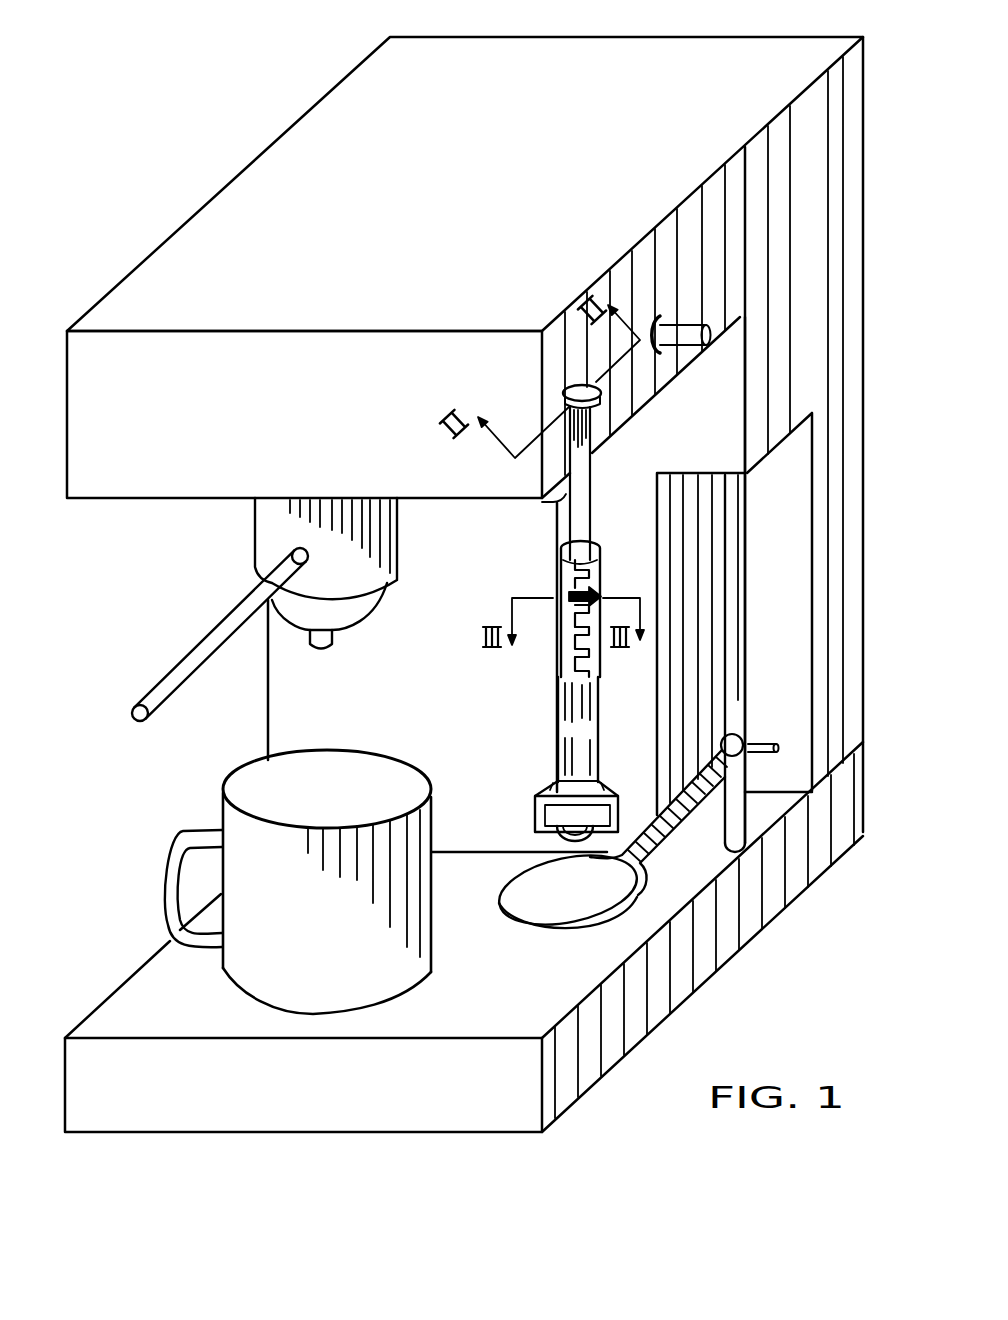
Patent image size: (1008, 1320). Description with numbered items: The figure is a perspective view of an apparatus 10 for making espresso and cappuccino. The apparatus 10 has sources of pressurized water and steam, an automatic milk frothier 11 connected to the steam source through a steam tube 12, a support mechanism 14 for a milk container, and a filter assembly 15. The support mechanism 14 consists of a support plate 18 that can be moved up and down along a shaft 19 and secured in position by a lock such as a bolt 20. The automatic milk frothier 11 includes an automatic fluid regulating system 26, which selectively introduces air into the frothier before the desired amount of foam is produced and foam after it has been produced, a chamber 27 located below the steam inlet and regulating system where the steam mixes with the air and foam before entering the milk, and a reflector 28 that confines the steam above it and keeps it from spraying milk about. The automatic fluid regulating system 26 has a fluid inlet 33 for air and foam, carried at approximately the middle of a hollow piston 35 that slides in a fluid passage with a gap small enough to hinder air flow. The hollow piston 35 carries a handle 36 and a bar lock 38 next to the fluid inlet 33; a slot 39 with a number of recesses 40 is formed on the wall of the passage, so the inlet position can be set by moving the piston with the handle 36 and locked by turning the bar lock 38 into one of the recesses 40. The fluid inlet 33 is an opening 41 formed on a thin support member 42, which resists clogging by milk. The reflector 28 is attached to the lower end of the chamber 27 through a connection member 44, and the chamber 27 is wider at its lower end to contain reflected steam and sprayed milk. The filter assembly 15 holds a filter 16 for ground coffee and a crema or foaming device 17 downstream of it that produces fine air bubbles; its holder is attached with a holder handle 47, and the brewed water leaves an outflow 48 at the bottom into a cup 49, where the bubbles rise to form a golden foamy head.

The apparatus 10 is at (171, 434).
The automatic milk frothier 11 is at (545, 709).
The steam tube 12 is at (555, 508).
The support mechanism 14 is at (636, 870).
The filter assembly 15 is at (240, 548).
The filter 16 is at (355, 570).
The crema or foaming device 17 is at (345, 615).
The support plate 18 is at (547, 905).
The shaft 19 is at (747, 607).
The bolt 20 is at (760, 740).
The automatic fluid regulating system 26 is at (598, 533).
The chamber 27 is at (545, 783).
The reflector 28 is at (560, 842).
The fluid inlet 33 is at (553, 591).
The hollow piston 35 is at (570, 465).
The handle 36 is at (582, 386).
The bar lock 38 is at (599, 576).
The slot 39 is at (568, 640).
The recesses 40 is at (592, 660).
The opening 41 is at (572, 626).
The support member 42 is at (559, 570).
The connection member 44 is at (535, 820).
The holder handle 47 is at (236, 603).
The outflow 48 is at (323, 647).
The cup 49 is at (336, 940).